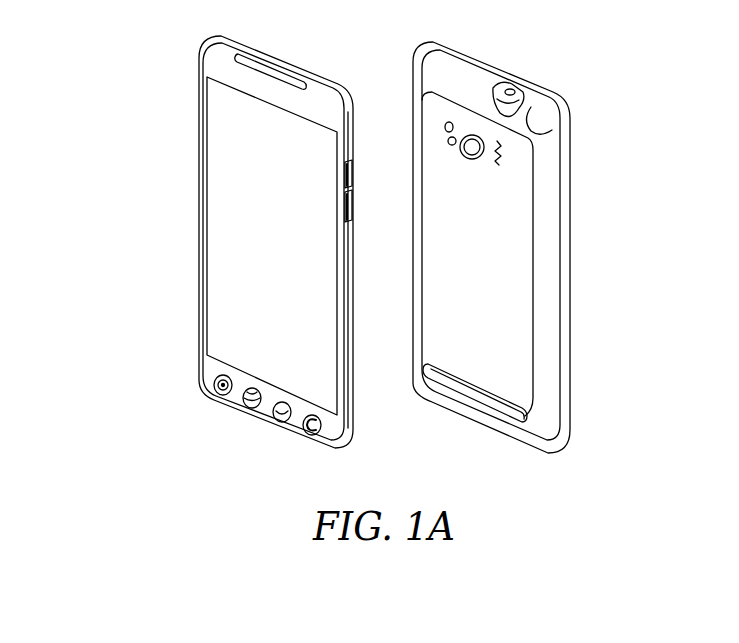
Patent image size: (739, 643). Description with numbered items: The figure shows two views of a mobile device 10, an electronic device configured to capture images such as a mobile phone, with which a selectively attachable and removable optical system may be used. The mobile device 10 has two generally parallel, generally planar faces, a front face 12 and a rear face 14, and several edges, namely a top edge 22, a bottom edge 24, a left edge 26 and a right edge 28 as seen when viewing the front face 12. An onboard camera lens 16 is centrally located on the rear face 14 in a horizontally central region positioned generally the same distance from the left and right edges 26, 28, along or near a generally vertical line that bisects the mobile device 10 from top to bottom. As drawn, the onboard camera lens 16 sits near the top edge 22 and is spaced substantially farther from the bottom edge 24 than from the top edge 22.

The mobile device 10 is at (133, 81).
The front face 12 is at (215, 265).
The rear face 14 is at (512, 335).
The onboard camera lens 16 is at (472, 148).
The top edge 22 is at (283, 53).
The bottom edge 24 is at (230, 406).
The left edge 26 is at (198, 183).
The right edge 28 is at (412, 345).